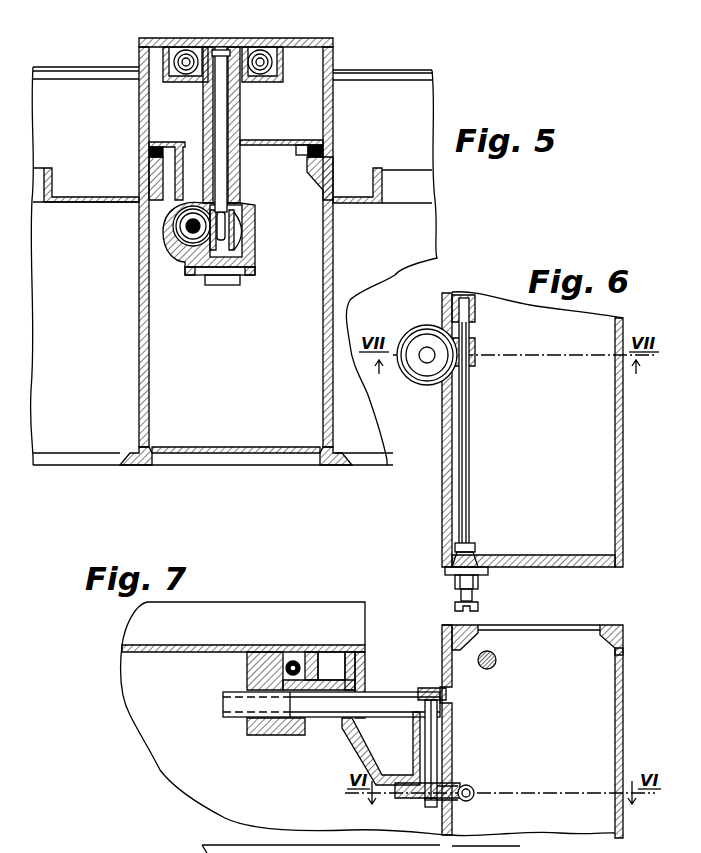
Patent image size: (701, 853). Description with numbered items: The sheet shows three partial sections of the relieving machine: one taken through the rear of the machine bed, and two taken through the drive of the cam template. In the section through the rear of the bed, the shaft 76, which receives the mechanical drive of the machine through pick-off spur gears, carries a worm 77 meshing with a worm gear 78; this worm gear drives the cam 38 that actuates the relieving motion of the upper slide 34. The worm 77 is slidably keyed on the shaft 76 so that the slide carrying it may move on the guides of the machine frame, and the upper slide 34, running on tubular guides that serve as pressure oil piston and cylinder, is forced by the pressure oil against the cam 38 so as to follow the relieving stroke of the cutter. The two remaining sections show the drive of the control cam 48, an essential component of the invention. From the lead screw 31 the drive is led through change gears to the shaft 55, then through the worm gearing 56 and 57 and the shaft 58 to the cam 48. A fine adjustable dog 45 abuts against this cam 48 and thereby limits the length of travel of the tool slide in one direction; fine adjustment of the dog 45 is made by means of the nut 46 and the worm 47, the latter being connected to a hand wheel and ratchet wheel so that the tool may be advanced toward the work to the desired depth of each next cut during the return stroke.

In FIG. 7, the lead screw 31 is at (497, 662).
In FIG. 7, the upper slide 34 is at (493, 849).
In FIG. 5, the cam 38 is at (220, 50).
In FIG. 7, the fine adjustable dog 45 is at (334, 719).
In FIG. 7, the nut 46 is at (292, 737).
In FIG. 7, the worm 47 is at (293, 660).
In FIG. 6, the cam 48 is at (427, 354).
In FIG. 7, the cam 48 is at (420, 690).
In FIG. 6, the shaft 55 is at (468, 424).
In FIG. 7, the shaft 55 is at (470, 788).
In FIG. 6, the worm gearing 56 is at (476, 358).
In FIG. 7, the worm gearing 56 is at (472, 798).
In FIG. 6, the worm gearing 57 is at (417, 374).
In FIG. 7, the worm gearing 57 is at (400, 797).
In FIG. 7, the shaft 58 is at (426, 750).
In FIG. 5, the shaft 76 is at (178, 252).
In FIG. 5, the worm 77 is at (202, 276).
In FIG. 5, the worm gear 78 is at (243, 225).